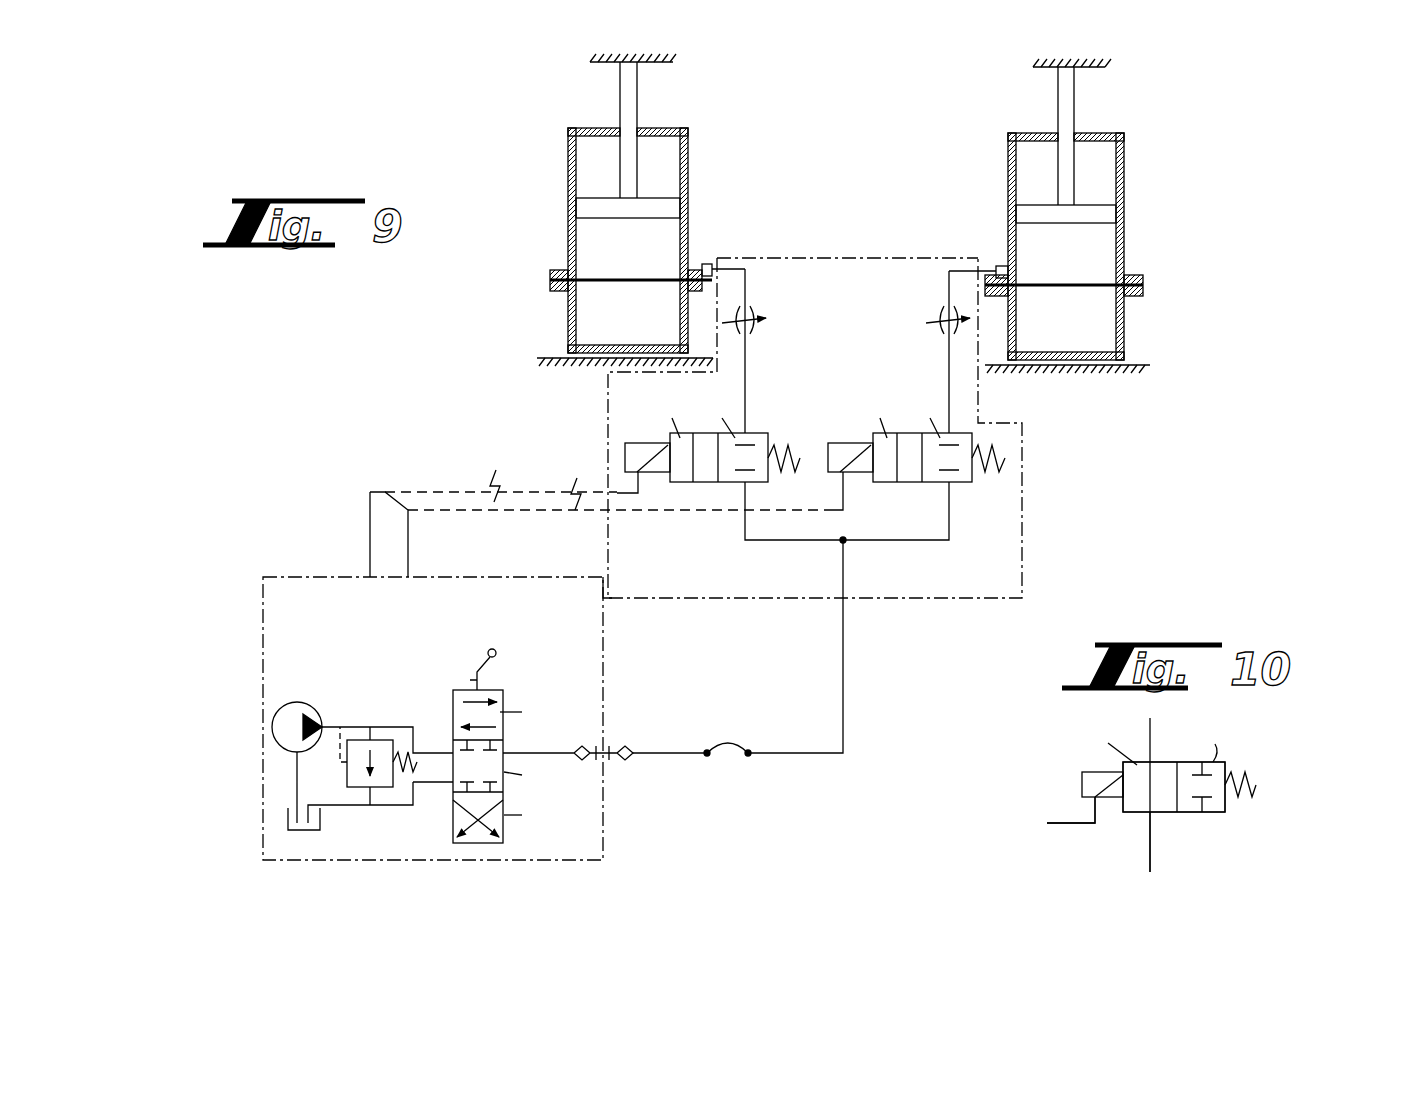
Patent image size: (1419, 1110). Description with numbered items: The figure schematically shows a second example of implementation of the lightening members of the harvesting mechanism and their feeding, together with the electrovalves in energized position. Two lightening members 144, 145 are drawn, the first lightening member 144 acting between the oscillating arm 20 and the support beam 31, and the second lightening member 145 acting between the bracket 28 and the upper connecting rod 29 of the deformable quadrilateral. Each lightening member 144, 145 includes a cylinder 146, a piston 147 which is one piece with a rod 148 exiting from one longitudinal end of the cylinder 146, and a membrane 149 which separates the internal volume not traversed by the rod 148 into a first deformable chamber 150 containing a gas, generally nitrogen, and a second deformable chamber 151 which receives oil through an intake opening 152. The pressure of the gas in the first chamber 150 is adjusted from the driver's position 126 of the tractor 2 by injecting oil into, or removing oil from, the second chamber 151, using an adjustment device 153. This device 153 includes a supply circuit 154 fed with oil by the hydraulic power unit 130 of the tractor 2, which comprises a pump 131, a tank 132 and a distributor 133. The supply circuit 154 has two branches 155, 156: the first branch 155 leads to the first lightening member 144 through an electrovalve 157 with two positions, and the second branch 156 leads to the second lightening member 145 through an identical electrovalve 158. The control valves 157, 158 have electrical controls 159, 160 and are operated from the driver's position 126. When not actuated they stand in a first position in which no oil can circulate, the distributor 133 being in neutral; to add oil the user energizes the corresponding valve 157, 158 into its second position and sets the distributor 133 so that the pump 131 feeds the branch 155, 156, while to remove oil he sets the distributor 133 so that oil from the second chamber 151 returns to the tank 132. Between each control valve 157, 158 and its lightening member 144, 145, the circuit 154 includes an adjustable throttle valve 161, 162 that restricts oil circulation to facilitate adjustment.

In FIG. 9, the tractor 2 is at (507, 574).
In FIG. 9, the oscillating arm 20 is at (555, 362).
In FIG. 9, the bracket 28 is at (1118, 365).
In FIG. 9, the upper connecting rod 29 is at (1046, 68).
In FIG. 9, the support beam 31 is at (600, 63).
In FIG. 9, the driver's position 126 is at (263, 588).
In FIG. 9, the hydraulic power unit 130 is at (575, 762).
In FIG. 9, the pump 131 is at (322, 688).
In FIG. 9, the tank 132 is at (320, 830).
In FIG. 9, the distributor 133 is at (503, 690).
In FIG. 9, the first lightening member 144 is at (853, 232).
In FIG. 9, the second lightening member 145 is at (1006, 150).
In FIG. 9, the cylinder 146 is at (690, 165).
In FIG. 9, the piston 147 is at (592, 203).
In FIG. 9, the rod 148 is at (638, 90).
In FIG. 9, the membrane 149 is at (632, 278).
In FIG. 9, the first deformable chamber 150 is at (590, 322).
In FIG. 9, the second deformable chamber 151 is at (580, 248).
In FIG. 9, the intake opening 152 is at (703, 266).
In FIG. 9, the adjustment device 153 is at (1026, 575).
In FIG. 9, the supply circuit 154 is at (850, 705).
In FIG. 9, the first branch 155 is at (750, 541).
In FIG. 10, the first branch 155 is at (1152, 862).
In FIG. 9, the second branch 156 is at (937, 545).
In FIG. 9, the electrovalve 157 is at (761, 431).
In FIG. 10, the electrovalve 157 is at (1229, 762).
In FIG. 9, the electrovalve 158 is at (976, 431).
In FIG. 10, the electrovalve 158 is at (1174, 787).
In FIG. 9, the electrical control 159 is at (370, 513).
In FIG. 10, the electrical control 159 is at (1048, 825).
In FIG. 9, the electrical control 160 is at (385, 492).
In FIG. 10, the electrical control 160 is at (1071, 810).
In FIG. 9, the throttle valve 161 is at (755, 312).
In FIG. 9, the throttle valve 162 is at (940, 312).